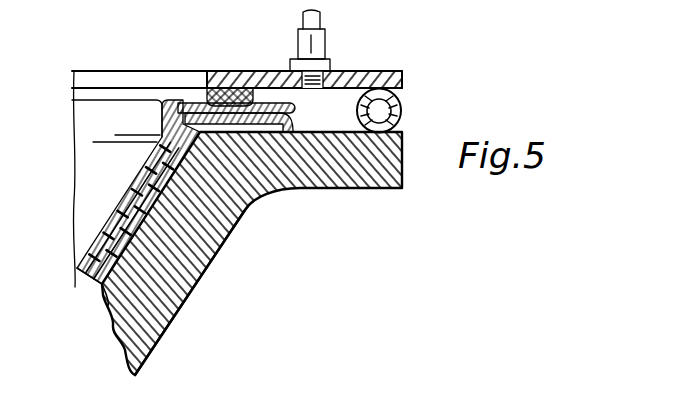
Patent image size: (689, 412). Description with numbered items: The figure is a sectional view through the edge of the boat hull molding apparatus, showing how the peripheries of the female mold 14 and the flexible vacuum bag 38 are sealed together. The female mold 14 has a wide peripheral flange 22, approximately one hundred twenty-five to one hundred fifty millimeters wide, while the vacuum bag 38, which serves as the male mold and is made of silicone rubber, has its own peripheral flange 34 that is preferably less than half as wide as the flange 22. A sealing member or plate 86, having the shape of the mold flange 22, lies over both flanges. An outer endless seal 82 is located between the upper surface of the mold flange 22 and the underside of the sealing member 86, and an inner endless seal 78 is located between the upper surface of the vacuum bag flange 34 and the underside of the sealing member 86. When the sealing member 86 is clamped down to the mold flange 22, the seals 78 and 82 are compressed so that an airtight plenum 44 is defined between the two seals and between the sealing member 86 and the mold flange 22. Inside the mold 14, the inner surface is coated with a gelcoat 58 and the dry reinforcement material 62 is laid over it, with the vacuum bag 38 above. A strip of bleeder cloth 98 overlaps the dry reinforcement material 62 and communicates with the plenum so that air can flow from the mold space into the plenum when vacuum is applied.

The female mold 14 is at (182, 327).
The peripheral flange 22 is at (343, 183).
The peripheral flange 34 is at (292, 100).
The flexible vacuum bag 38 is at (92, 257).
The cavity / gap 44 is at (350, 113).
The gelcoat 58 is at (100, 290).
The dry reinforcement material 62 is at (78, 286).
The inner endless seal 78 is at (195, 99).
The outer endless seal 82 is at (401, 107).
The sealing member or plate 86 is at (383, 72).
The bleeder cloth 98 is at (292, 125).